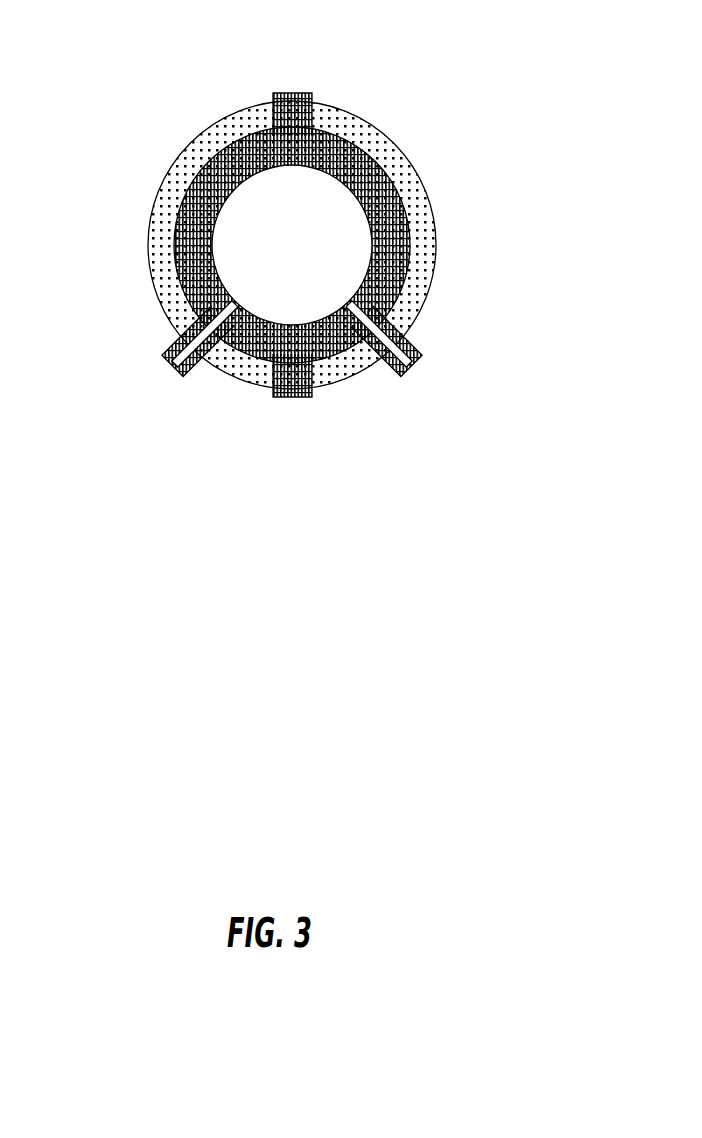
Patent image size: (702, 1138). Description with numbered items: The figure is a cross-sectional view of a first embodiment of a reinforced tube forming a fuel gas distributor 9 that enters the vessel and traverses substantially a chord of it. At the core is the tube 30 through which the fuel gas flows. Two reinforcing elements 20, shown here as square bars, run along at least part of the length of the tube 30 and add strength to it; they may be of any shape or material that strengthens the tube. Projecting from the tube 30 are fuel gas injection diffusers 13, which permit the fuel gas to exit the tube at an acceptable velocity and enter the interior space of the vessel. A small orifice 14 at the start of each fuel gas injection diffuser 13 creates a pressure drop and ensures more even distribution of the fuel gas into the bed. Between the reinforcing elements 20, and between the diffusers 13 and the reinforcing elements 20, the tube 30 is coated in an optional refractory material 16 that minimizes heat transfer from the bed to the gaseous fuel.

The fuel gas distributor 9 is at (310, 253).
The fuel gas injection diffuser 13 is at (188, 347).
The small orifice 14 is at (190, 331).
The refractory material 16 is at (187, 170).
The reinforcing element 20 is at (293, 93).
The tube 30 is at (372, 175).